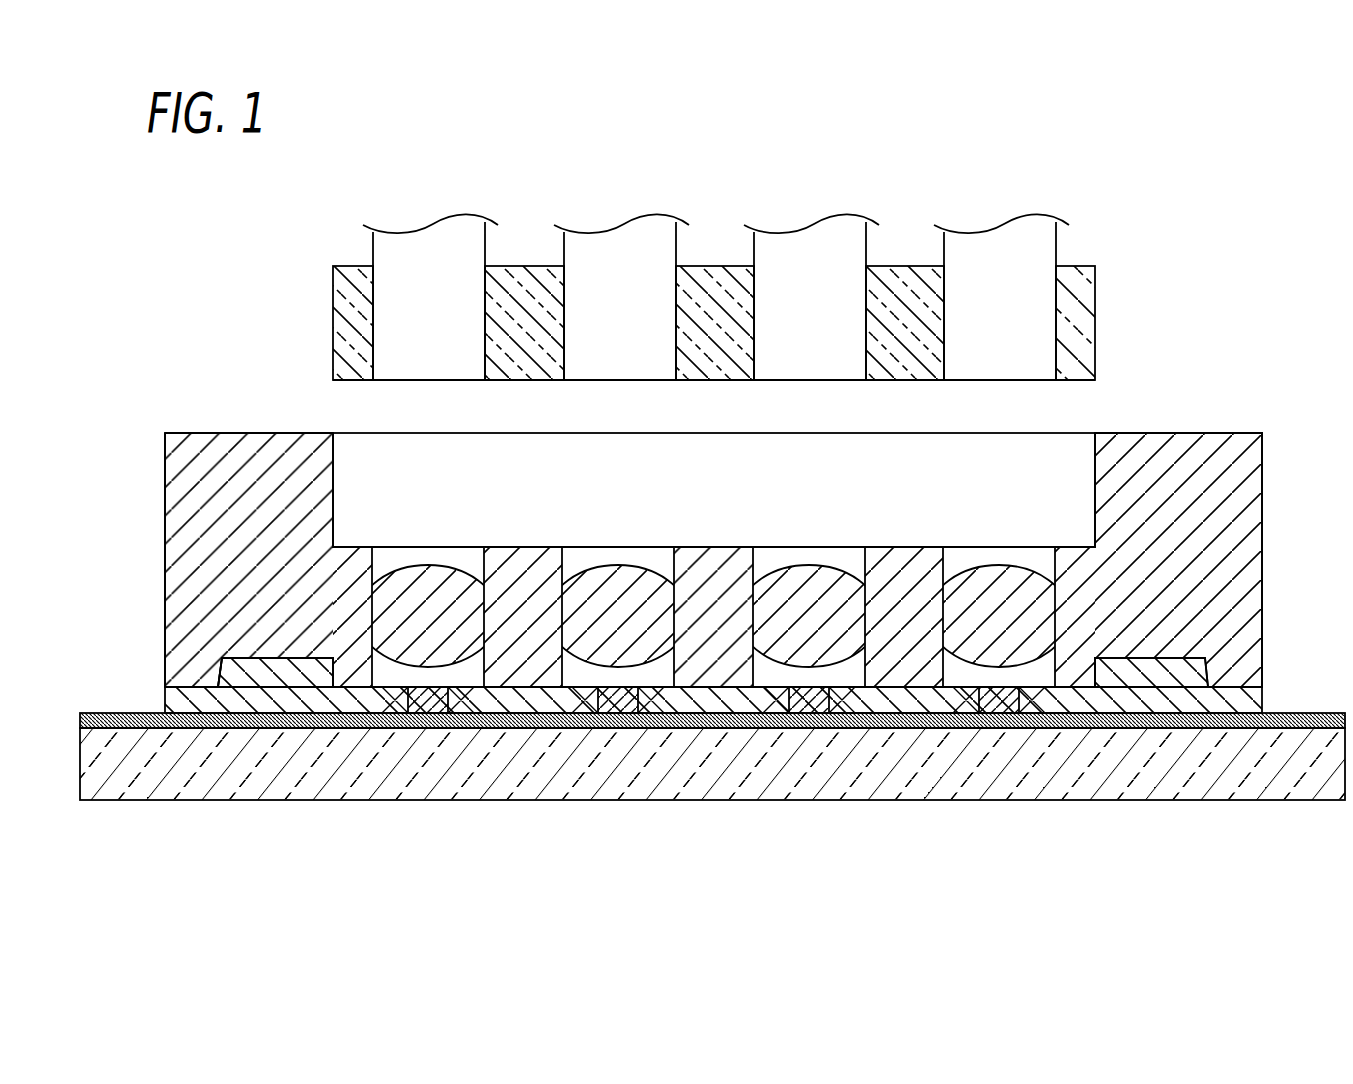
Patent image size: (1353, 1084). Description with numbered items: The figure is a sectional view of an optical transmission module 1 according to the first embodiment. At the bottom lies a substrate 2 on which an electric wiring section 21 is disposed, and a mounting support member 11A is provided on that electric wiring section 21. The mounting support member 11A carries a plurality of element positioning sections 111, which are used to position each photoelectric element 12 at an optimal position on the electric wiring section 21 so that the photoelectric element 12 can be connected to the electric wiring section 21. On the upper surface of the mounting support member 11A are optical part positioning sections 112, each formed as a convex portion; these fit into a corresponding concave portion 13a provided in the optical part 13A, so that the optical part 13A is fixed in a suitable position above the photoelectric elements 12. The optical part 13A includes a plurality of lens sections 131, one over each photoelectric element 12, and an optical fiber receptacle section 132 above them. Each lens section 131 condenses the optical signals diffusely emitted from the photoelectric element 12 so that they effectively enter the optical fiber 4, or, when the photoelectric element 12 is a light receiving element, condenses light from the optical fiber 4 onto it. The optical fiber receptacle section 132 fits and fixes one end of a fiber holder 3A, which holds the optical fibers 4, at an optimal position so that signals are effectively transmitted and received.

The optical transmission module 1 is at (1153, 408).
The substrate 2 is at (1023, 770).
The fiber holder 3A is at (333, 280).
The optical fiber 4 is at (1015, 290).
The mounting support member 11A is at (1093, 698).
The photoelectric element 12 is at (813, 717).
The concave portion 13a is at (242, 658).
The optical part 13A is at (1193, 463).
The electric wiring section 21 is at (678, 728).
The element positioning section 111 is at (447, 692).
The optical part positioning section 112 is at (288, 658).
The lens section 131 is at (410, 567).
The optical fiber receptacle section 132 is at (1068, 463).